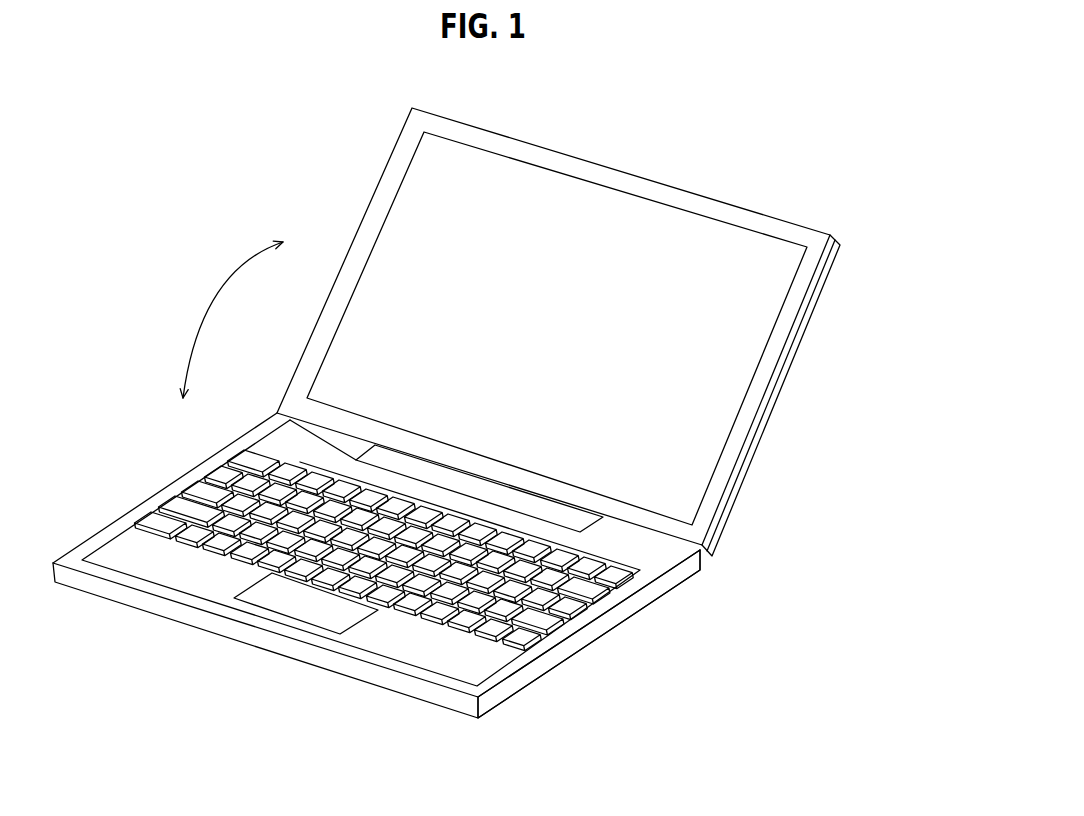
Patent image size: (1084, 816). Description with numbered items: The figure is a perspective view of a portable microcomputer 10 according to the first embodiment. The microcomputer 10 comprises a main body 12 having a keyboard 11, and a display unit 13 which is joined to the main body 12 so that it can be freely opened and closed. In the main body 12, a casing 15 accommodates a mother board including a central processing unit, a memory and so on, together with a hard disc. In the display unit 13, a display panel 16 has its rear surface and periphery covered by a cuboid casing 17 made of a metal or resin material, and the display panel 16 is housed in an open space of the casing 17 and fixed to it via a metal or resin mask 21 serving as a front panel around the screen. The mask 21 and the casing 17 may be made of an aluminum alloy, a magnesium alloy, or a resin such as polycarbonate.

The portable microcomputer 10 is at (689, 172).
The keyboard 11 is at (211, 512).
The main body 12 is at (523, 695).
The display unit 13 is at (773, 442).
The casing 15 is at (590, 633).
The display panel 16 is at (417, 243).
The casing 17 is at (797, 348).
The mask 21 is at (812, 232).